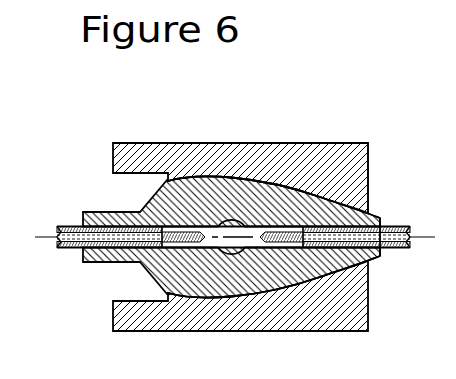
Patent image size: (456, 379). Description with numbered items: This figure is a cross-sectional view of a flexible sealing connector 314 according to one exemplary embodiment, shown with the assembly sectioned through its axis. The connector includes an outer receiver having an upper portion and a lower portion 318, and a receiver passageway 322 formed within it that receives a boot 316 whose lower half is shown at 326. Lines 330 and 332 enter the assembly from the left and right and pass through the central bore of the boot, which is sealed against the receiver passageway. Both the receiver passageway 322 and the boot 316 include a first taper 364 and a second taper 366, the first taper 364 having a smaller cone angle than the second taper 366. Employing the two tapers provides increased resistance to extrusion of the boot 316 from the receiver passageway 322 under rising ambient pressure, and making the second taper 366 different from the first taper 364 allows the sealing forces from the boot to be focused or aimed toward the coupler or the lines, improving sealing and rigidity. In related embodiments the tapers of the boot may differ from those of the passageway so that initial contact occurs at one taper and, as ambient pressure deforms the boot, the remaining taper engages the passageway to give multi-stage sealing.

The optical connector housing assembly 314 is at (126, 129).
The boot 316 is at (276, 206).
The lower housing body 318 is at (326, 312).
The receiver passageway 322 is at (183, 182).
The lower insert 326 is at (233, 256).
The left fiber cable 330 is at (88, 250).
The right fiber cable 332 is at (390, 250).
The first taper 364 is at (268, 182).
The second taper 366 is at (335, 188).